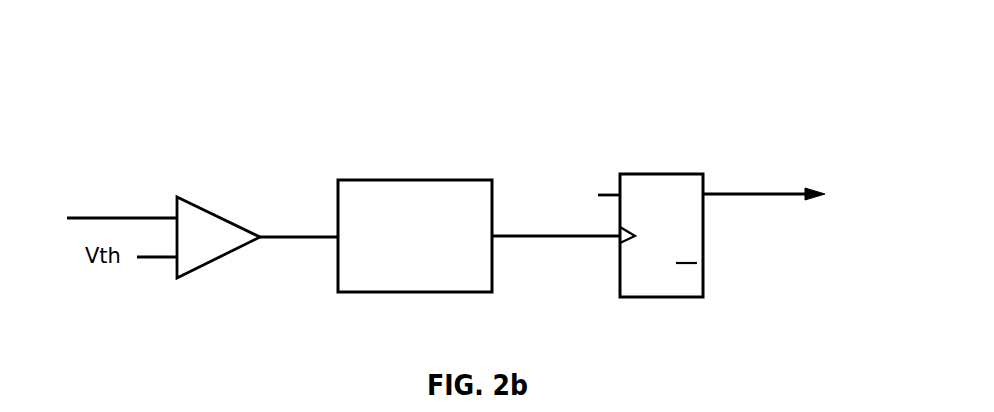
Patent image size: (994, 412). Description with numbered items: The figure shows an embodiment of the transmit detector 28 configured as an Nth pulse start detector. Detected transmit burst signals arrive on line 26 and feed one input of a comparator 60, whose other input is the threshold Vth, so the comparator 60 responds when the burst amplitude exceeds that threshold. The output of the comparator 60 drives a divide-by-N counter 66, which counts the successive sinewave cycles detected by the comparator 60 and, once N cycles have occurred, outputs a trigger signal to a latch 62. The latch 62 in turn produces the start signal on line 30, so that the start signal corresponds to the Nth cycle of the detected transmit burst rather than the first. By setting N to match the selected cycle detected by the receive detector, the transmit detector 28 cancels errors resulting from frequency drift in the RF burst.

The line 26 is at (127, 215).
The comparator 60 is at (235, 217).
The divide-by-N counter 66 is at (422, 177).
The latch 62 is at (676, 170).
The line 30 is at (788, 188).
The transmit detector 28 is at (805, 85).